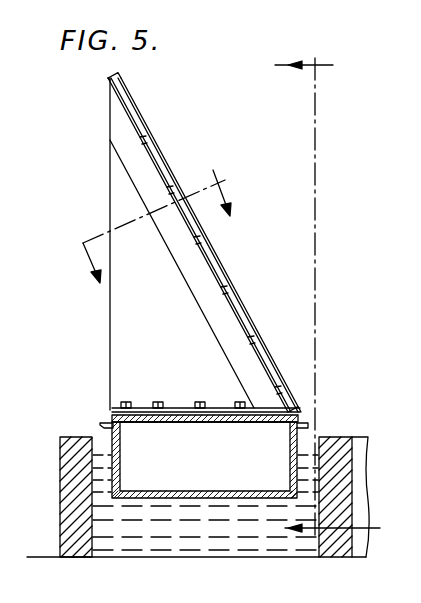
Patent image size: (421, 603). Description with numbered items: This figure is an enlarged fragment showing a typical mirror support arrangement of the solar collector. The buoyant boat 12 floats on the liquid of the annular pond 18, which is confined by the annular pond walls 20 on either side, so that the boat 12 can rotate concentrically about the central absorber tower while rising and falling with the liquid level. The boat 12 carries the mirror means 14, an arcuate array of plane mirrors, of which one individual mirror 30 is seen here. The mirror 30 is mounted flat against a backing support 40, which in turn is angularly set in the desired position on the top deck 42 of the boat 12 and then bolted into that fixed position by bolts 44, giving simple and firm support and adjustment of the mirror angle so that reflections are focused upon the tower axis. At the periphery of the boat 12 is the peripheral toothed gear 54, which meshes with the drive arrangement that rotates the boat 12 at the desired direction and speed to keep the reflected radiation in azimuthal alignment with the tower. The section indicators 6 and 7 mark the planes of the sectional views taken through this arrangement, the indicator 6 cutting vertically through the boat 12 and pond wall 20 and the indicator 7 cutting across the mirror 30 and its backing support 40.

The section line 6- 6 is at (337, 298).
The section line 7- 7 is at (147, 215).
The boat 12 is at (300, 430).
The mirror means 14 is at (152, 137).
The annular pond 18 is at (108, 514).
The annular pond wall 20 is at (62, 448).
The mirror 30 is at (212, 247).
The backing support 40 is at (118, 180).
The top deck 42 is at (222, 424).
The bolt 44 is at (158, 402).
The peripheral toothed gear 54 is at (112, 446).